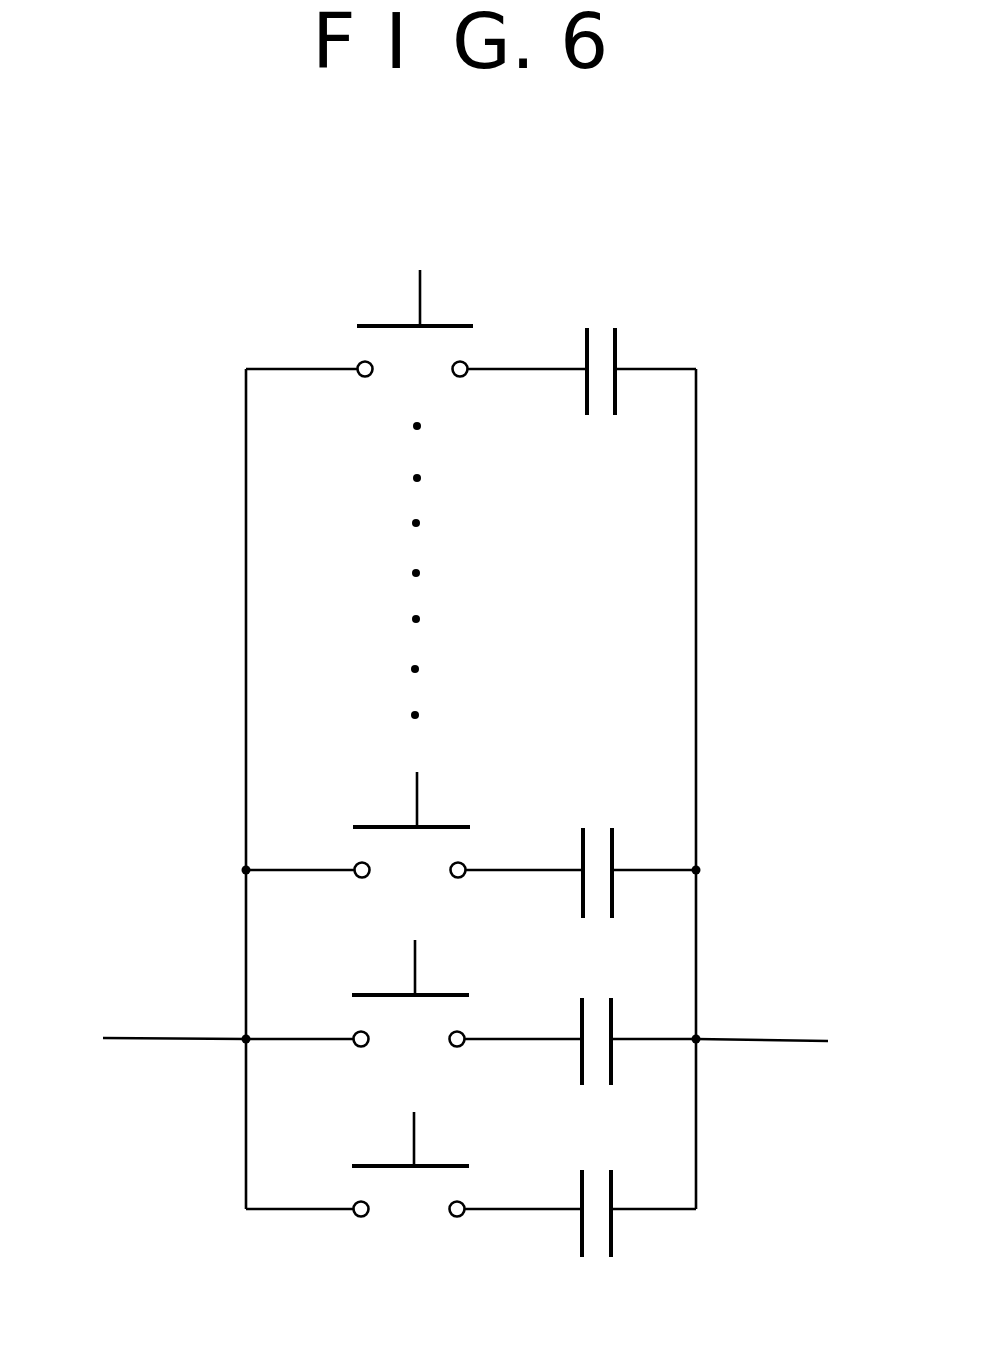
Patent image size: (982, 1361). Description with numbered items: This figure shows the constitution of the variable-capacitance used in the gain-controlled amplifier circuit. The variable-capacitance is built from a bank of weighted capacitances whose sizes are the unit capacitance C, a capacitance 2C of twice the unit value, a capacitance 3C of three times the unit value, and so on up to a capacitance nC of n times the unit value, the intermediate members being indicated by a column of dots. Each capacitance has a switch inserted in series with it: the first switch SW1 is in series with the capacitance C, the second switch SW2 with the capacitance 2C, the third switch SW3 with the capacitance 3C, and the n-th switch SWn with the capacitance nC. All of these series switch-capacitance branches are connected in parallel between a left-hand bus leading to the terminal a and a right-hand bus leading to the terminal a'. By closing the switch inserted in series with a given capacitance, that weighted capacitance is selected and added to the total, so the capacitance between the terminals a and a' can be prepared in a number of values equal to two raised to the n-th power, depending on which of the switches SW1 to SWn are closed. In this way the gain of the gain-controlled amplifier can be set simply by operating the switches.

The n-th switch SWn is at (416, 323).
The third switch SW3 is at (414, 825).
The second switch SW2 is at (414, 993).
The first switch SW1 is at (414, 1162).
The weighted capacitance nC is at (641, 368).
The weighted capacitance 3C is at (639, 869).
The weighted capacitance 2C is at (639, 1035).
The weighted capacitance C is at (639, 1204).
The terminal a is at (153, 1032).
The terminal a' is at (782, 1048).